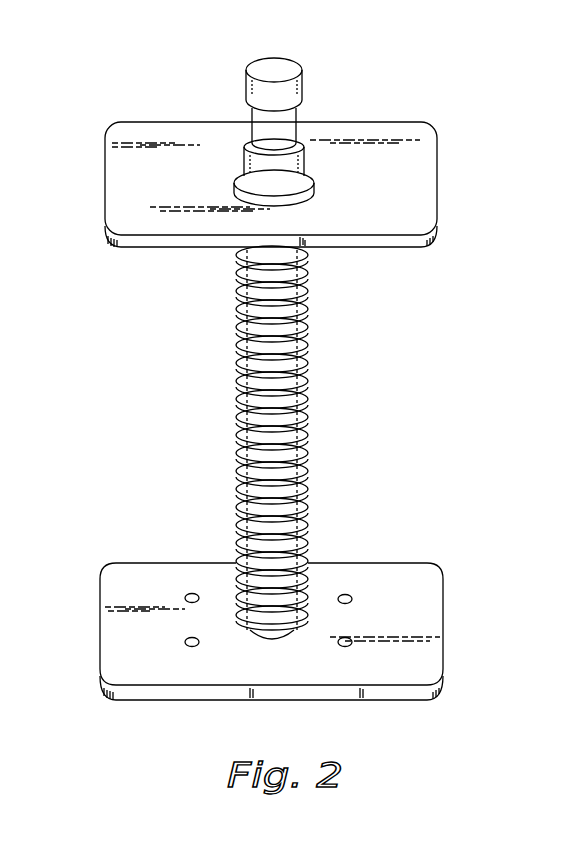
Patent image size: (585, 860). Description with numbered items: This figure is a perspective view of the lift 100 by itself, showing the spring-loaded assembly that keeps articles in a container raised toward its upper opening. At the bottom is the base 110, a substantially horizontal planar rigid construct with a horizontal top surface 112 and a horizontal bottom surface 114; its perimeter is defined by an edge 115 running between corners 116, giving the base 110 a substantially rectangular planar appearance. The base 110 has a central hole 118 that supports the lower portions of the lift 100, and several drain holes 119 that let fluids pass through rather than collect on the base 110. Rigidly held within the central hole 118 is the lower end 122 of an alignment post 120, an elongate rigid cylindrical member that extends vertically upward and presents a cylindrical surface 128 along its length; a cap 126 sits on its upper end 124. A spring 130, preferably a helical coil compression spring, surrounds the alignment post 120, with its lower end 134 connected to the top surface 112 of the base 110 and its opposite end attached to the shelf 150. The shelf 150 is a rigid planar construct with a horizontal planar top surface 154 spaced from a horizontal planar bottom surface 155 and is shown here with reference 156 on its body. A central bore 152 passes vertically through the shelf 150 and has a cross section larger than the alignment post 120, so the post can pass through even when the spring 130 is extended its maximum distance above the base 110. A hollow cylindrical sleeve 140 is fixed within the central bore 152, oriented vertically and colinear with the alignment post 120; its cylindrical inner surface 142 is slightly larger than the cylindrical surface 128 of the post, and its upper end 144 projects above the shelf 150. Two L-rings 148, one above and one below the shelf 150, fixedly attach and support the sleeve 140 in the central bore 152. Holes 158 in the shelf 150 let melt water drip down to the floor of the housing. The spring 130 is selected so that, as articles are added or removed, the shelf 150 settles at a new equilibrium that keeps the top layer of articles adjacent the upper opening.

The lift 100 is at (478, 103).
The base 110 is at (475, 608).
The top surface 112 is at (383, 628).
The bottom surface 114 is at (389, 716).
The edge 115 is at (166, 700).
The corners 116 is at (441, 695).
The central hole 118 is at (247, 624).
The drain holes 119 is at (185, 596).
The alignment post 120 is at (273, 442).
The lower end 122 is at (256, 640).
The upper end 124 is at (251, 125).
The cap 126 is at (290, 66).
The cylindrical surface 128 is at (258, 141).
The spring 130 is at (308, 368).
The lower end 134 is at (289, 640).
The sleeve 140 is at (306, 152).
The cylindrical inner surface 142 is at (300, 130).
The upper end 144 is at (250, 143).
The L-rings 148 is at (238, 182).
The shelf 150 is at (92, 179).
The central bore 152 is at (318, 190).
The top surface 154 is at (398, 243).
The bottom surface 155 is at (340, 250).
The top plate 156 is at (438, 195).
The holes 158 is at (185, 245).